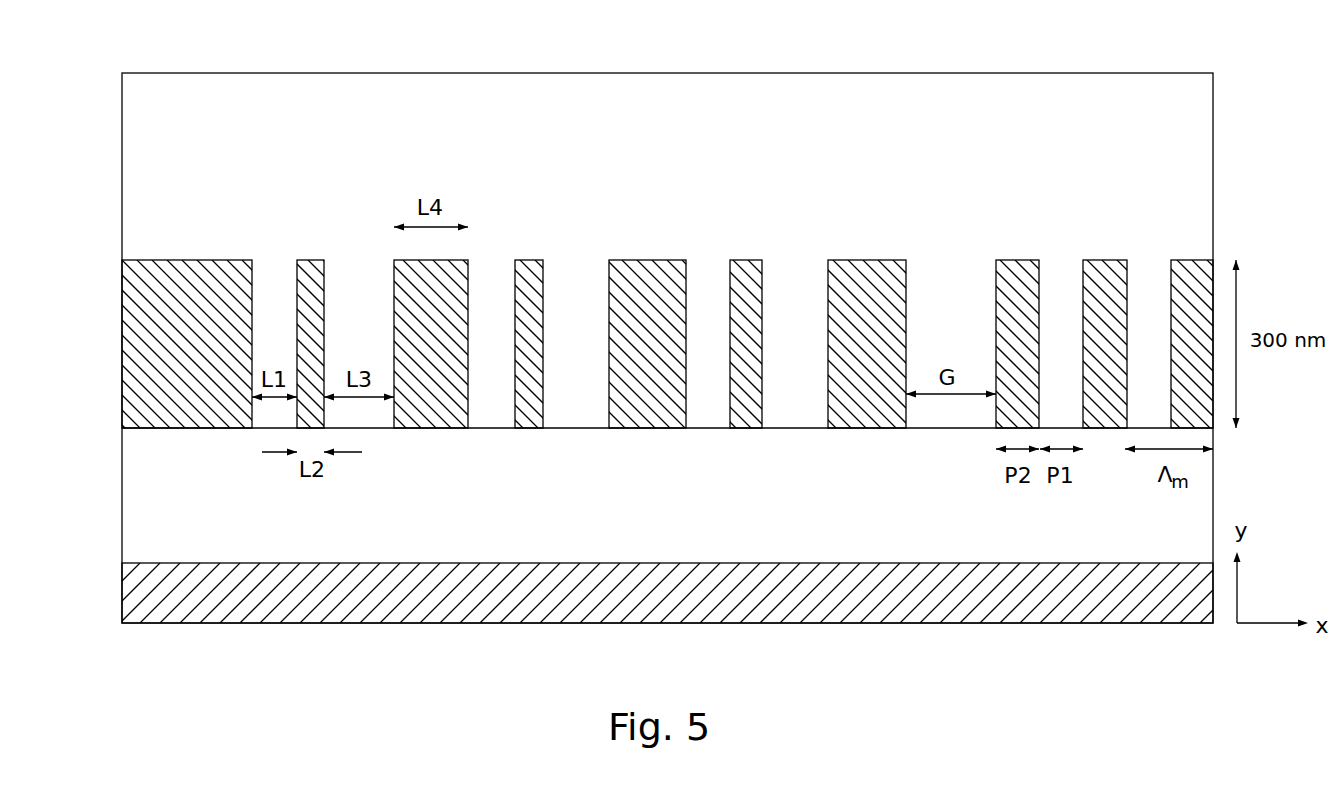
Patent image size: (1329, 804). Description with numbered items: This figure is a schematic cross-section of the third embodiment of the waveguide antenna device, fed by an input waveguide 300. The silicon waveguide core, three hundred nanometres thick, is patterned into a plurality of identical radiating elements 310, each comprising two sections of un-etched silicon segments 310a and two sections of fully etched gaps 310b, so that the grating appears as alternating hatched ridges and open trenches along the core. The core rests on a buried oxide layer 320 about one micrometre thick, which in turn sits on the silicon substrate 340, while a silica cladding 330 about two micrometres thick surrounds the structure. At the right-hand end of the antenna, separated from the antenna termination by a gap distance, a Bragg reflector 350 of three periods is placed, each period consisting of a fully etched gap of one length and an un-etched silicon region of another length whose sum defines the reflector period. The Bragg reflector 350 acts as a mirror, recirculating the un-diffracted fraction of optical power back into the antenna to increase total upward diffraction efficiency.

The input waveguide 300 is at (122, 376).
The radiating elements 310 is at (230, 122).
The un-etched silicon segments 310a is at (306, 260).
The fully etched gaps 310b is at (362, 346).
The buried oxide layer 320 is at (1213, 483).
The silica cladding 330 is at (1213, 122).
The silicon substrate 340 is at (122, 596).
The Bragg reflector 350 is at (1213, 225).